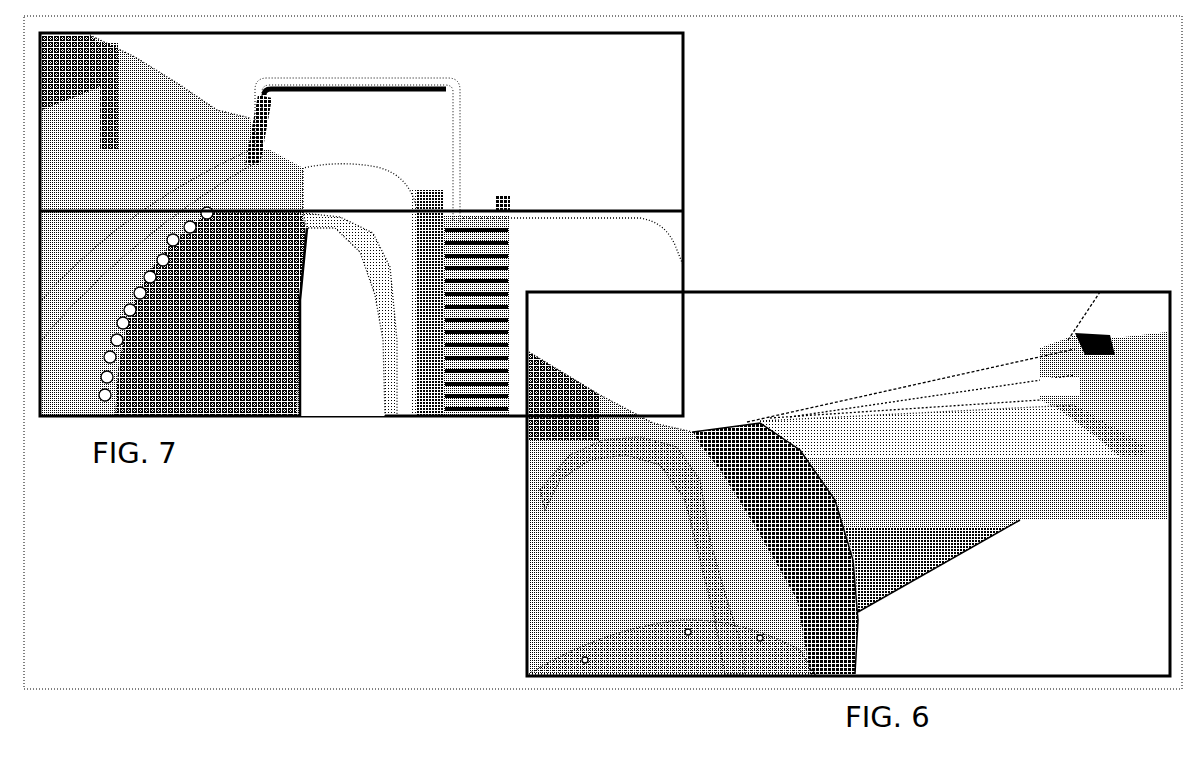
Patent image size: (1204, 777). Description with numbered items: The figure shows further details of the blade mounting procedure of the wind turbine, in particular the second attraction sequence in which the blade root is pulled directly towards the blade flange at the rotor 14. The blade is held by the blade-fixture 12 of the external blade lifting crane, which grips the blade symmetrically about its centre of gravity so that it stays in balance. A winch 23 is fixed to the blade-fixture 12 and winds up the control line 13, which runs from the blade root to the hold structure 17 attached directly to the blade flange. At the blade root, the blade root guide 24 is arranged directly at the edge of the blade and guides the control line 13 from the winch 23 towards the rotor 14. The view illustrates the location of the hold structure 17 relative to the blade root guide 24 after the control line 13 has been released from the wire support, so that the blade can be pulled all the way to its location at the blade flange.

In FIG. 7, the blade-fixture 12 is at (185, 380).
In FIG. 7, the control line 13 is at (550, 208).
In FIG. 6, the control line 13 is at (968, 373).
In FIG. 7, the rotor 14 is at (186, 100).
In FIG. 7, the hold structure 17 is at (235, 207).
In FIG. 6, the hold structure 17 is at (602, 452).
In FIG. 6, the winch 23 is at (1090, 345).
In FIG. 7, the blade root guide 24 is at (510, 202).
In FIG. 6, the blade root guide 24 is at (750, 418).